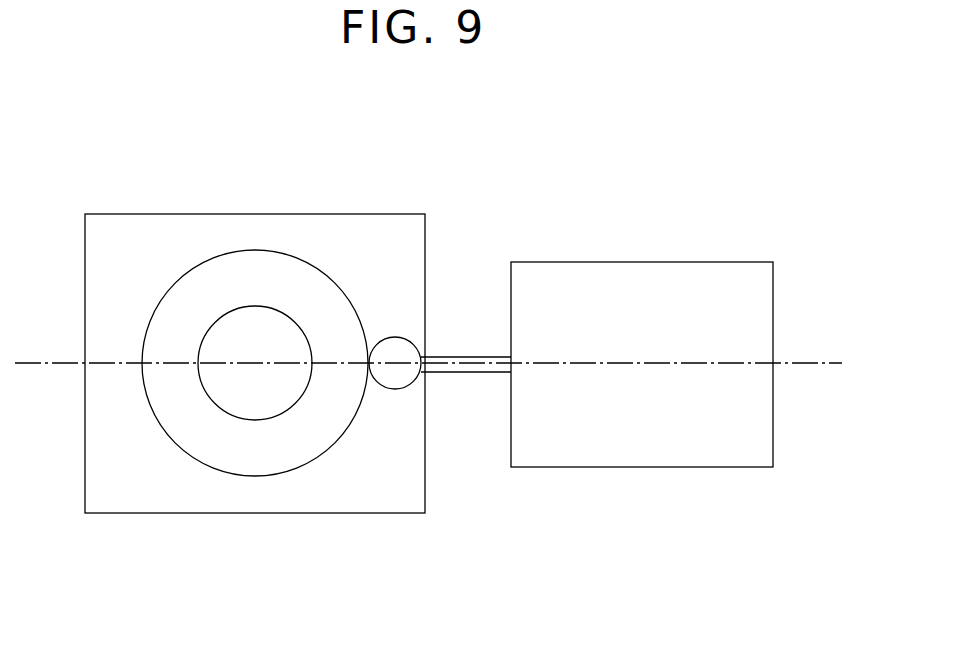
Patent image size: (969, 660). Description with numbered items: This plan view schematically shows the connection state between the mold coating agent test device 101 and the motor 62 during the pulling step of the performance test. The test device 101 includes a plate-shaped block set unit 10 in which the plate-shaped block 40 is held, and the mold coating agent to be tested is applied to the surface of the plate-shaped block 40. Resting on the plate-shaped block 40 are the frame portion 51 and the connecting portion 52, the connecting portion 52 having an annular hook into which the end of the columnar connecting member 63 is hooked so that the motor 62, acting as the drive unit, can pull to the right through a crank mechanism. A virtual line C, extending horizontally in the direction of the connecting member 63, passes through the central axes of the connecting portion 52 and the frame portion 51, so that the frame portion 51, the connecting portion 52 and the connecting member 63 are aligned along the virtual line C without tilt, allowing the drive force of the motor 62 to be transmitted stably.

The mold coating agent test device 101 is at (423, 185).
The plate-shaped block set unit 10 is at (370, 523).
The plate-shaped block 40 is at (140, 492).
The frame portion 51 is at (280, 283).
The connecting portion 52 is at (395, 377).
The motor 62 is at (672, 310).
The connecting member 63 is at (470, 357).
The virtual line C is at (800, 361).